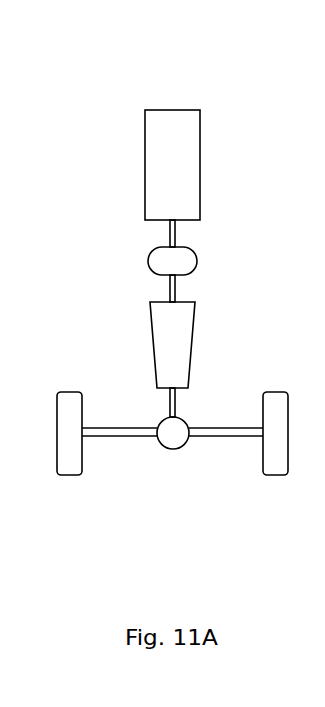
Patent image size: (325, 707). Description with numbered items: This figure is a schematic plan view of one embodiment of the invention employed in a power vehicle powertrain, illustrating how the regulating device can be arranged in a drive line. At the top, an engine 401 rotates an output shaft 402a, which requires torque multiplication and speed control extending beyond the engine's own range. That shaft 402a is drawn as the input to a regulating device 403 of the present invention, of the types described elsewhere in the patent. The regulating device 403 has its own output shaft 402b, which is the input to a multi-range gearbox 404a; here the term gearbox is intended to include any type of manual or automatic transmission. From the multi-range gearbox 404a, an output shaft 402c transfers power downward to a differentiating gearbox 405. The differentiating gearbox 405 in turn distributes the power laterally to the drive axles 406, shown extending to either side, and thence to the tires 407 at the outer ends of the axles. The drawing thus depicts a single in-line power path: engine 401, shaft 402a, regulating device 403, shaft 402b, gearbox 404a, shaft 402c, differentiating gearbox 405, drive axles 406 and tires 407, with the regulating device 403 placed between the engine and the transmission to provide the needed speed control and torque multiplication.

The engine 401 is at (165, 117).
The output shaft 402a is at (171, 240).
The regulating device 403 is at (173, 262).
The output shaft 402b is at (168, 292).
The multi-range gearbox 404a is at (173, 342).
The output shaft 402c is at (168, 407).
The differentiating gearbox 405 is at (173, 432).
The drive axles 406 is at (123, 437).
The tires 407 is at (72, 467).